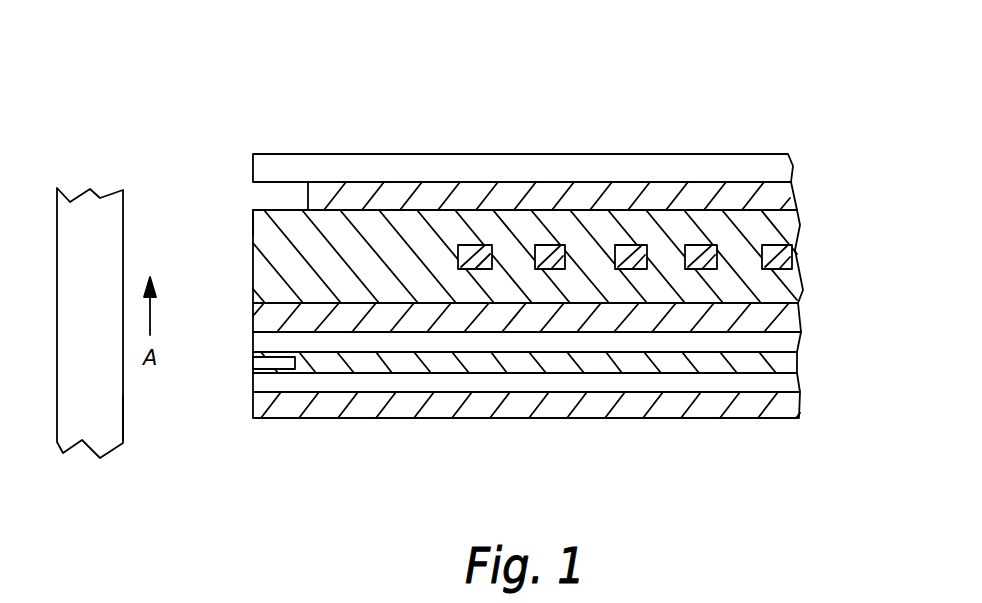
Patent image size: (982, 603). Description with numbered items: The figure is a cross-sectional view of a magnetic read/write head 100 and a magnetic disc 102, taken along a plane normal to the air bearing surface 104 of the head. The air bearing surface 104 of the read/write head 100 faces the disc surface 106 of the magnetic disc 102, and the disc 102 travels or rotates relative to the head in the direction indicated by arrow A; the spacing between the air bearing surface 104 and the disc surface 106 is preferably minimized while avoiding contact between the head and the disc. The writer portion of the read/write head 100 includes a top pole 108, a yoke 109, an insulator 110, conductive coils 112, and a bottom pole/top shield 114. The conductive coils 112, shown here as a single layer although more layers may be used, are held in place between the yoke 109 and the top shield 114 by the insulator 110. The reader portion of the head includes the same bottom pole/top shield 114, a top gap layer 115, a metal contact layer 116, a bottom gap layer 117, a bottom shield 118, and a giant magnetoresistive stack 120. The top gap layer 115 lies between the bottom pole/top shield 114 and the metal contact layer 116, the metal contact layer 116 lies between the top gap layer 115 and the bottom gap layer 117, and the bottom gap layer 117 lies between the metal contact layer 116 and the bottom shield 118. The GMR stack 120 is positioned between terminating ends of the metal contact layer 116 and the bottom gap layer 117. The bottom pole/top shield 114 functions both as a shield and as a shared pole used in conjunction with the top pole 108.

The magnetic read/write head 100 is at (683, 107).
The magnetic disc 102 is at (110, 364).
The air bearing surface 104 is at (253, 258).
The disc surface 106 is at (123, 413).
The top pole 108 is at (747, 167).
The yoke 109 is at (308, 200).
The insulator 110 is at (258, 226).
The conductive coils 112 is at (780, 250).
The bottom pole/top shield 114 is at (790, 318).
The top gap layer 115 is at (792, 345).
The metal contact layer 116 is at (793, 365).
The bottom gap layer 117 is at (795, 387).
The bottom shield 118 is at (790, 410).
The giant magnetoresistive (GMR) stack 120 is at (262, 362).